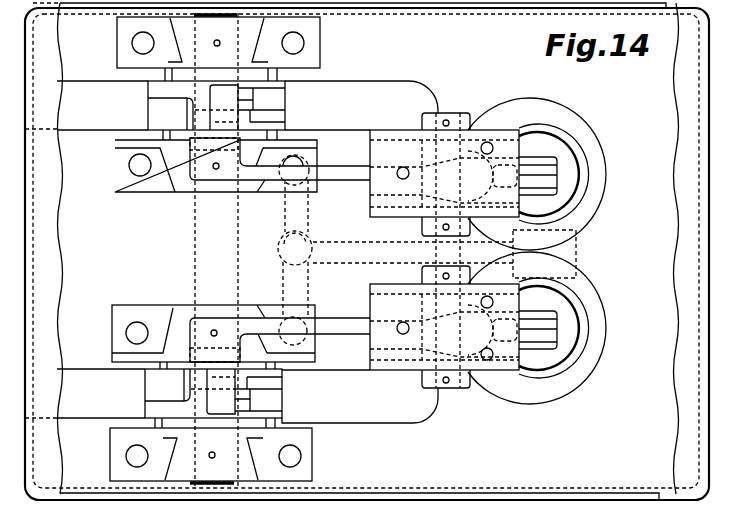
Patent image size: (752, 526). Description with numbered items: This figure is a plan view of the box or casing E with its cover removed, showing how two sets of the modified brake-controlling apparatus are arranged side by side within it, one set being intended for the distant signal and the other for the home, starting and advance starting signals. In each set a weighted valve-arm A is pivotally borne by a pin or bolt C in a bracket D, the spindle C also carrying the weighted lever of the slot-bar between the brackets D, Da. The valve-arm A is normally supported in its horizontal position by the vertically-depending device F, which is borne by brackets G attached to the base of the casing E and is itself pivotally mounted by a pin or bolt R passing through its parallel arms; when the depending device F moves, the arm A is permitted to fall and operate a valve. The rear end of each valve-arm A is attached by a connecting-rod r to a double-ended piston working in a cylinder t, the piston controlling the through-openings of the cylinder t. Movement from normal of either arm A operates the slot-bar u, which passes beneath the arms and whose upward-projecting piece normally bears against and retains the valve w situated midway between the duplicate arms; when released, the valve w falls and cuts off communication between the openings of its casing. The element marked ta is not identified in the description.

The box or casing E is at (367, 251).
The pin or bolt R is at (201, 307).
The brackets G is at (141, 191).
The vertically-depending device F is at (148, 108).
The valve-arm or lever A is at (220, 174).
The valve w is at (302, 188).
The slot-bar u is at (284, 208).
The connecting-rod r is at (616, 175).
The pin or bolt (rod or spindle) C is at (430, 364).
The bracket Da is at (463, 174).
The bracket D is at (463, 327).
The upper roller ta is at (576, 148).
The cylinder t is at (572, 357).